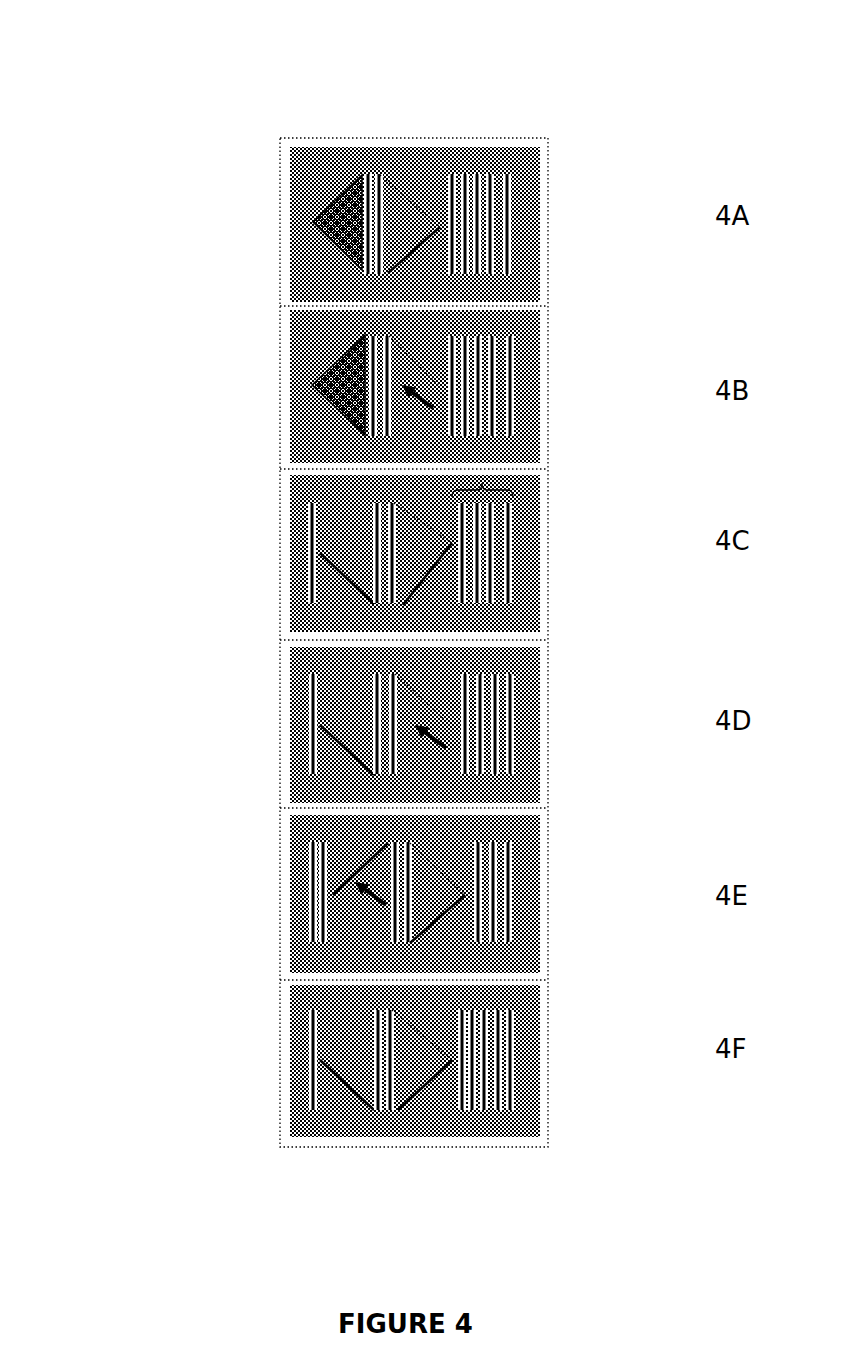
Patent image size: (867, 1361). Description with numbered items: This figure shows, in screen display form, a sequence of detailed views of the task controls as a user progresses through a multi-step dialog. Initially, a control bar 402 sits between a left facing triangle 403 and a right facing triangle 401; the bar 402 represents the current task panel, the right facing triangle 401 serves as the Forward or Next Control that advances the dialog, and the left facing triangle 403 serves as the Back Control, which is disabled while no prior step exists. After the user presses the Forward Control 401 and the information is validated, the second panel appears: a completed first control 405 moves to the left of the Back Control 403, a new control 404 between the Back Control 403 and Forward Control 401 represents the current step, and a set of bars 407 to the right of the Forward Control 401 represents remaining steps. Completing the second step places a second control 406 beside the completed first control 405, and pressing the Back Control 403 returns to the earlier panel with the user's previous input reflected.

The right facing triangle 401 is at (402, 198).
The control (bar) 402 is at (375, 174).
The left facing triangle 403 is at (313, 218).
The control 404 is at (388, 502).
The completed first control 405 is at (312, 503).
The second control 406 is at (322, 841).
The set of bars 407 is at (513, 490).